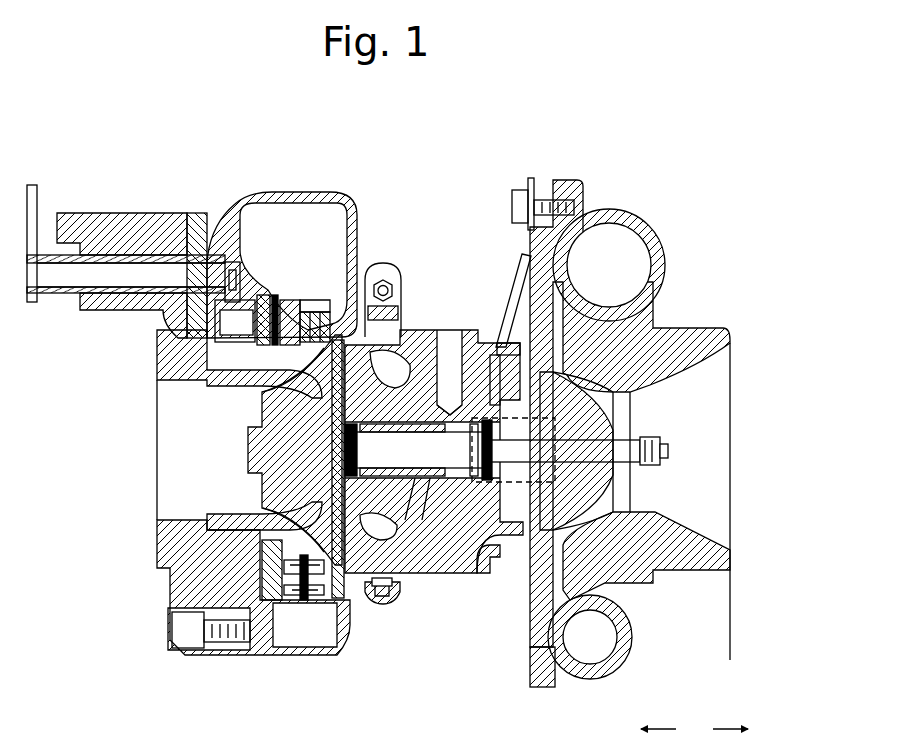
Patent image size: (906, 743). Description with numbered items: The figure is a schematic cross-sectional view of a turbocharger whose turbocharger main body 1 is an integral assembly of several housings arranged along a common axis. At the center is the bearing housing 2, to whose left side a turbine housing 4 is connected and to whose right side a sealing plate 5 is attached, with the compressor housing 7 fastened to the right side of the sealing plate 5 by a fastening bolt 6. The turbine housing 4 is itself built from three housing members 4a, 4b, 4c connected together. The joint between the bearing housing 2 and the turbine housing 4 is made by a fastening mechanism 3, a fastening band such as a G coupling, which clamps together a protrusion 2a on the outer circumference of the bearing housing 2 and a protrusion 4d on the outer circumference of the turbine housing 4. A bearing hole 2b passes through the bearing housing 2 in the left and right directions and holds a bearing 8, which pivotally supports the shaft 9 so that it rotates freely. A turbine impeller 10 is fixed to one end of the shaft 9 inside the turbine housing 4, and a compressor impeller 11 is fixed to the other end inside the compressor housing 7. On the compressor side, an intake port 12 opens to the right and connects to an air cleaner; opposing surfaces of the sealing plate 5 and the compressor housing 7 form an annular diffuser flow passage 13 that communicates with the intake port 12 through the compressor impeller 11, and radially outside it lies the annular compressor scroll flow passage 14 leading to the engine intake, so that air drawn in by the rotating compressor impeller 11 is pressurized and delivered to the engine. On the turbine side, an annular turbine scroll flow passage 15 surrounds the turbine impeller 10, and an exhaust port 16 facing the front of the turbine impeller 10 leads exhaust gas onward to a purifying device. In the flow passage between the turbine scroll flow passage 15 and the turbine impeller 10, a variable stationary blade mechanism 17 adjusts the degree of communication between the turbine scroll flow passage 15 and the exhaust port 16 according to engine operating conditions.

The turbocharger main body 1 is at (137, 110).
The bearing housing 2 is at (432, 329).
The protrusion 2a is at (395, 602).
The bearing hole 2b is at (473, 552).
The fastening mechanism 3 is at (382, 602).
The turbine housing 4 is at (194, 407).
The housing member 4a is at (324, 192).
The housing member 4b is at (205, 385).
The housing member 4c is at (202, 213).
The protrusion 4d is at (362, 600).
The sealing plate 5 is at (514, 287).
The fastening bolt 6 is at (518, 190).
The compressor housing 7 is at (710, 326).
The bearing 8 is at (412, 498).
The shaft 9 is at (432, 500).
The turbine impeller 10 is at (263, 494).
The compressor impeller 11 is at (635, 410).
The intake port 12 is at (733, 372).
The diffuser flow passage 13 is at (551, 308).
The compressor scroll flow passage 14 is at (632, 234).
The turbine scroll flow passage 15 is at (273, 192).
The exhaust port 16 is at (157, 453).
The variable stationary blade mechanism 17 is at (307, 305).